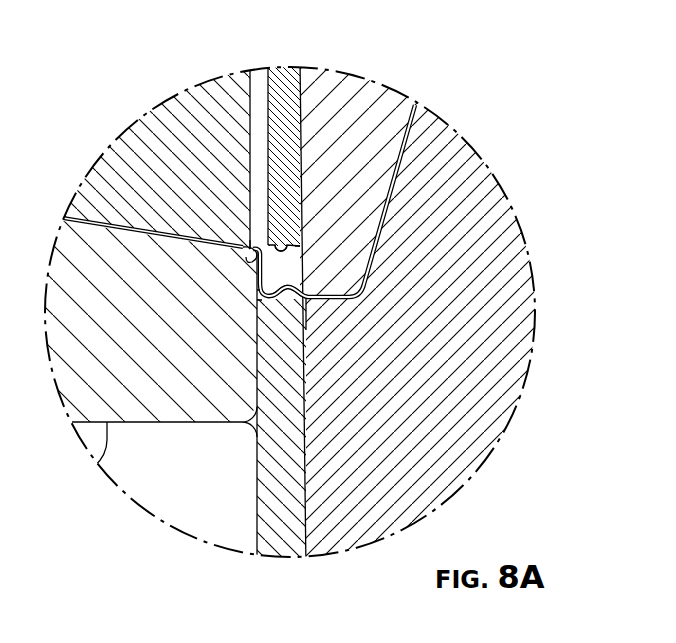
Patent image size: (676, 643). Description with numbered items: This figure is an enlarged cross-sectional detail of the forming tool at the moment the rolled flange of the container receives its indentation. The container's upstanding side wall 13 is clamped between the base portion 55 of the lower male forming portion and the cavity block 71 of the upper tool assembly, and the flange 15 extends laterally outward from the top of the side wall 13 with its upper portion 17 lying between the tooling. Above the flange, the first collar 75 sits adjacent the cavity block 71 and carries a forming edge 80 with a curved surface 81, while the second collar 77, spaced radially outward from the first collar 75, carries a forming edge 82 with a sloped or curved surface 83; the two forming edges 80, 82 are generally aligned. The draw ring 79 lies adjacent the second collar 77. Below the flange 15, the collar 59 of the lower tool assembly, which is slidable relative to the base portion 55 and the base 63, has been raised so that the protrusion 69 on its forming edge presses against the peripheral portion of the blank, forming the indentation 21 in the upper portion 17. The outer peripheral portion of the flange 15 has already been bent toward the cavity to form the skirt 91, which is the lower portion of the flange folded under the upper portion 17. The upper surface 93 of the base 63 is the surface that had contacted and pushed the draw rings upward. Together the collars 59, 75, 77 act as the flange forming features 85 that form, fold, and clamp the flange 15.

The side wall 13 is at (378, 234).
The flange 15 is at (293, 316).
The upper portion 17 is at (314, 302).
The indentation 21 is at (290, 279).
The base portion 55 is at (398, 408).
The collar 59 is at (262, 472).
The base 63 is at (150, 497).
The protrusion 69 is at (262, 302).
The cavity block 71 is at (348, 175).
The first collar 75 is at (286, 135).
The second collar 77 is at (258, 103).
The draw ring 79 is at (173, 175).
The forming edge 80 is at (287, 242).
The curved surface 81 is at (302, 250).
The forming edge 82 is at (247, 243).
The sloped or curved surface 83 is at (247, 262).
The flange forming features 85 is at (237, 183).
The skirt 91 is at (256, 292).
The upper surface 93 is at (102, 460).